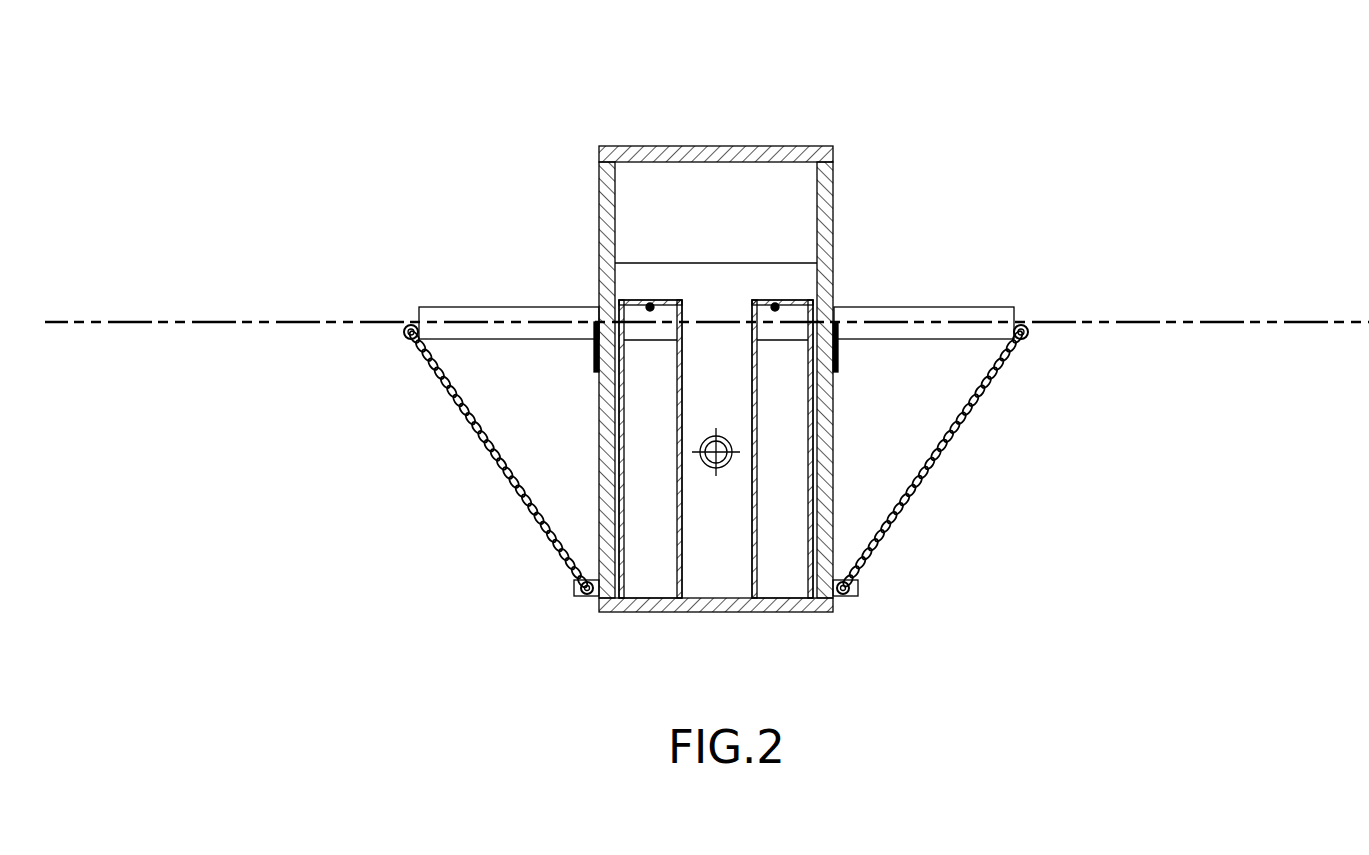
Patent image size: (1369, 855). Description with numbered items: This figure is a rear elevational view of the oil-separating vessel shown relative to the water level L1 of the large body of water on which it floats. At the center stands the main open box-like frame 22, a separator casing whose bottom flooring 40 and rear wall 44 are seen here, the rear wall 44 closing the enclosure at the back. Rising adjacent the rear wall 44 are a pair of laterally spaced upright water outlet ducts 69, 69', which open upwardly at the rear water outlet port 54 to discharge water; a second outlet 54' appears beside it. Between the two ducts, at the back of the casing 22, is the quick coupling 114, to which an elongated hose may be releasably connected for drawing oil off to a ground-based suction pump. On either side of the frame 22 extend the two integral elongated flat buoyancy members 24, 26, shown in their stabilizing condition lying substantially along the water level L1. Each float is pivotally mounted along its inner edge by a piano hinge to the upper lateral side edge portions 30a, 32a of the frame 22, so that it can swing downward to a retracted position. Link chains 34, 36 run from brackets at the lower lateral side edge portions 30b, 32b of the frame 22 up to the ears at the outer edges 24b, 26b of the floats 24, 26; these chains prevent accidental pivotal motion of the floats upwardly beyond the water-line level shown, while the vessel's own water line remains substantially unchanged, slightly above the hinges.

The water level L1 is at (289, 318).
The main open box-like frame 22 is at (600, 432).
The bottom flooring 40 is at (720, 612).
The vertical pipe 69 is at (650, 449).
The upright water outlet duct 69' is at (782, 449).
The rear wall 44 is at (736, 548).
The rear water outlet port 54 is at (569, 220).
The right pivot pin 54' is at (880, 226).
The quick coupling 114 is at (731, 450).
The buoyancy member 26 is at (500, 307).
The buoyancy member 24 is at (932, 307).
The upper lateral side edge portion 32a is at (592, 325).
The upper lateral side edge portion 30a is at (841, 325).
The outer edge 26b is at (404, 322).
The outer edge 24b is at (1029, 322).
The link chain 36 is at (487, 444).
The link chain 34 is at (958, 431).
The lower lateral side edge portion 32b is at (583, 592).
The lower lateral side edge portion 30b is at (852, 596).